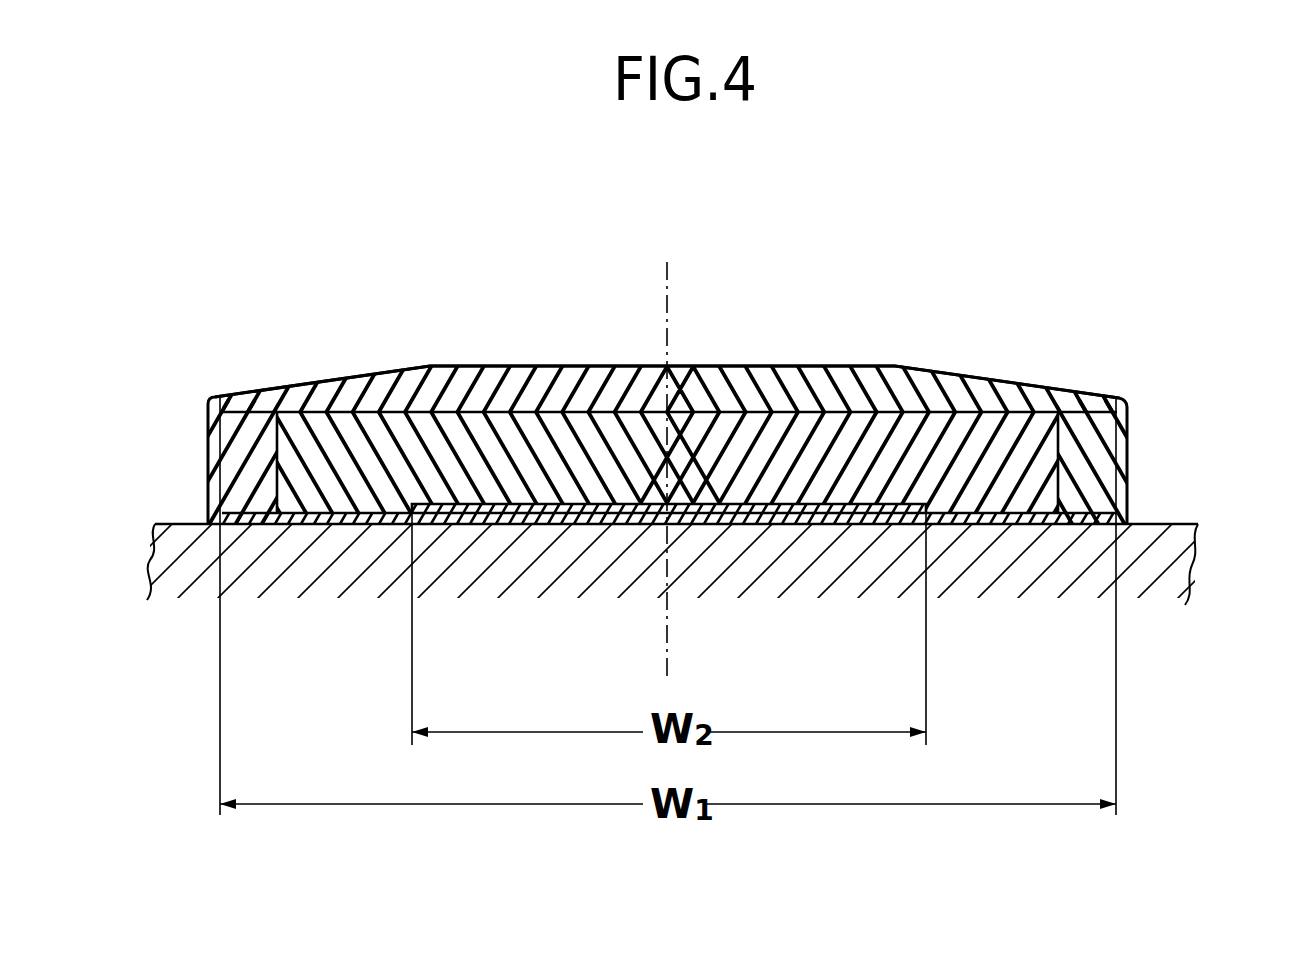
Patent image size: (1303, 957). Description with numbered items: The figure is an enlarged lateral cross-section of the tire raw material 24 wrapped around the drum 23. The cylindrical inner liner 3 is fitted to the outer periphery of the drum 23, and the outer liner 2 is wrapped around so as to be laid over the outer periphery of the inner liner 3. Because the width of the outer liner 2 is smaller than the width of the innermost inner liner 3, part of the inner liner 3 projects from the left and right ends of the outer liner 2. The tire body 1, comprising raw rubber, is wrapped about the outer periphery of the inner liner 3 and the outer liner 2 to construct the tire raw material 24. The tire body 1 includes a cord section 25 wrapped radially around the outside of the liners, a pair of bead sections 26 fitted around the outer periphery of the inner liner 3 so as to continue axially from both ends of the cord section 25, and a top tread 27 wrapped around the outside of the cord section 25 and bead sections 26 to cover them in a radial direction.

The tire body 1 is at (615, 363).
The outer liner 2 is at (718, 512).
The inner liner 3 is at (972, 528).
The drum 23 is at (1153, 540).
The tire raw material 24 is at (682, 353).
The cord section 25 is at (552, 423).
The bead sections 26 is at (250, 428).
The top tread 27 is at (742, 383).